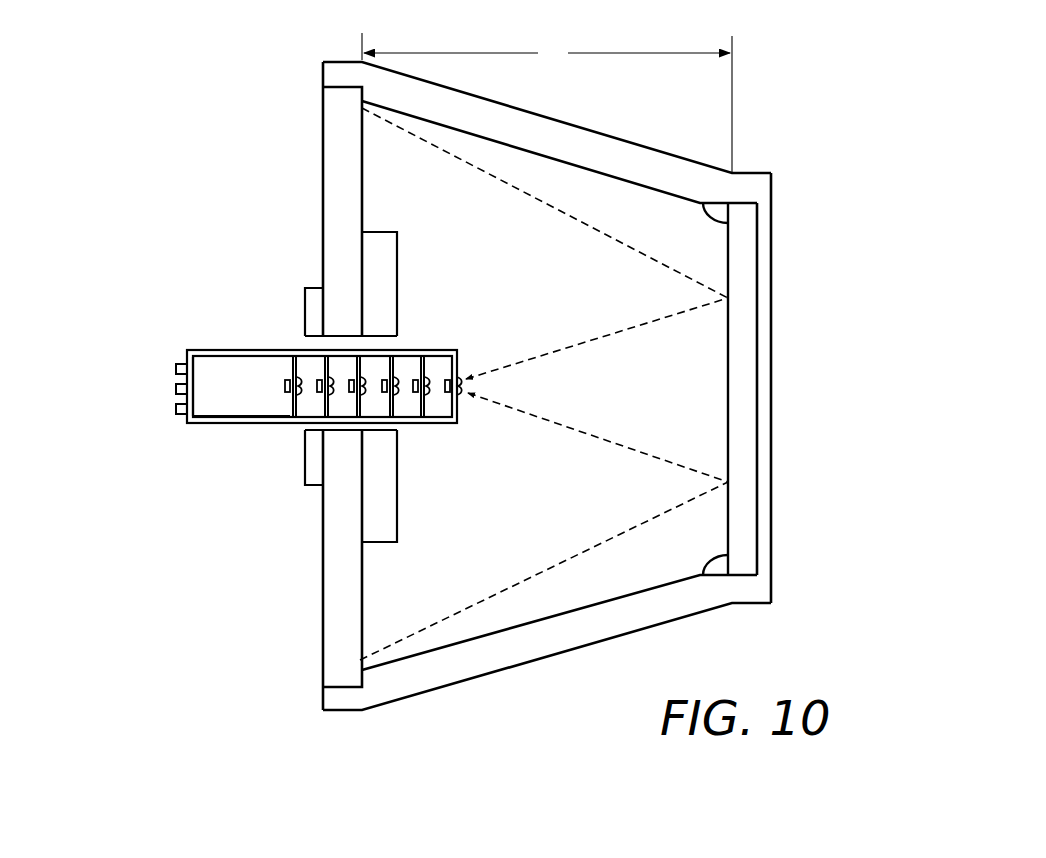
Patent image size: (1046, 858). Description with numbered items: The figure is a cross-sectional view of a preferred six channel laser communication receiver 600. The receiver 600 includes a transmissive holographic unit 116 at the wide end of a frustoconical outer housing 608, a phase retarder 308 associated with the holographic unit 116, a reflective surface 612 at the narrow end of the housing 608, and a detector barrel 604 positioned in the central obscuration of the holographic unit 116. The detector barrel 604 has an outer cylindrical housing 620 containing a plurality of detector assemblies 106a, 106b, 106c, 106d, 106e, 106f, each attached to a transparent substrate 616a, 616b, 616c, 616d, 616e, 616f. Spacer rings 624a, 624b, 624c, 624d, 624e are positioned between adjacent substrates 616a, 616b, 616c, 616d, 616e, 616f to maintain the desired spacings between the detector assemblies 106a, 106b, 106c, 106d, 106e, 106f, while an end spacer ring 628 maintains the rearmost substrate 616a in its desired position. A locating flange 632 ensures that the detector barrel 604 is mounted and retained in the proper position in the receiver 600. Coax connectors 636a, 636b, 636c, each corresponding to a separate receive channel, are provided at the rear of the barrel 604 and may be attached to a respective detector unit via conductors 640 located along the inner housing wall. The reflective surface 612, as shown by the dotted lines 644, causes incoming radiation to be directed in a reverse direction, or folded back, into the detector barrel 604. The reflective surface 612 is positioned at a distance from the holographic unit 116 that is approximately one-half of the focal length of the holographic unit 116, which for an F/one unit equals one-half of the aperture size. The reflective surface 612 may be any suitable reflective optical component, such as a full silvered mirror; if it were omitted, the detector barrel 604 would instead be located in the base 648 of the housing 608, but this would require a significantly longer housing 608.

The receiver 600 is at (553, 397).
The detector barrel 604 is at (329, 356).
The frustoconical outer housing 608 is at (630, 140).
The reflective surface 612 is at (747, 552).
The transparent substrate 616a is at (287, 381).
The transparent substrate 616b is at (319, 392).
The transparent substrate 616c is at (352, 380).
The transparent substrate 616d is at (386, 394).
The transparent substrate 616e is at (417, 394).
The transparent substrate 616f is at (450, 395).
The outer cylindrical housing 620 is at (193, 351).
The spacer ring 624a is at (298, 377).
The spacer ring 624b is at (331, 377).
The spacer ring 624c is at (364, 377).
The spacer ring 624d is at (397, 377).
The spacer ring 624e is at (429, 377).
The end spacer ring 628 is at (190, 424).
The locating flange 632 is at (316, 288).
The coax connector 636a is at (177, 368).
The coax connector 636b is at (177, 388).
The coax connector 636c is at (177, 409).
The conductors 640 is at (216, 413).
The dotted lines 644 is at (607, 236).
The base 648 is at (773, 457).
The transmissive holographic unit 116 is at (322, 628).
The phase retarder 308 is at (383, 246).
The detector assembly 106a is at (276, 383).
The detector assembly 106b is at (309, 394).
The detector assembly 106c is at (342, 395).
The detector assembly 106d is at (375, 395).
The detector assembly 106e is at (436, 395).
The detector assembly 106f is at (467, 386).